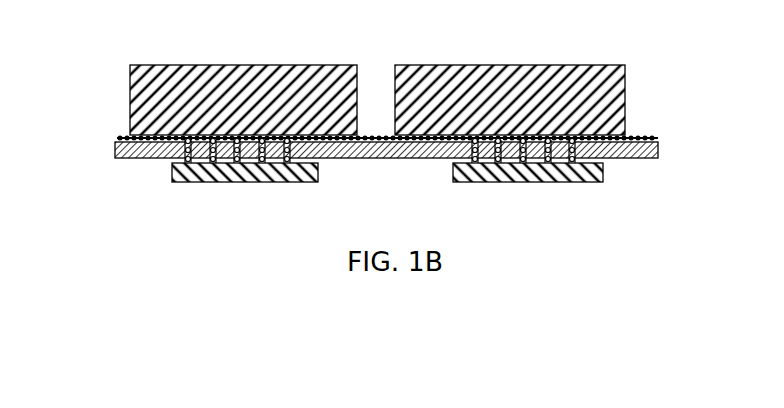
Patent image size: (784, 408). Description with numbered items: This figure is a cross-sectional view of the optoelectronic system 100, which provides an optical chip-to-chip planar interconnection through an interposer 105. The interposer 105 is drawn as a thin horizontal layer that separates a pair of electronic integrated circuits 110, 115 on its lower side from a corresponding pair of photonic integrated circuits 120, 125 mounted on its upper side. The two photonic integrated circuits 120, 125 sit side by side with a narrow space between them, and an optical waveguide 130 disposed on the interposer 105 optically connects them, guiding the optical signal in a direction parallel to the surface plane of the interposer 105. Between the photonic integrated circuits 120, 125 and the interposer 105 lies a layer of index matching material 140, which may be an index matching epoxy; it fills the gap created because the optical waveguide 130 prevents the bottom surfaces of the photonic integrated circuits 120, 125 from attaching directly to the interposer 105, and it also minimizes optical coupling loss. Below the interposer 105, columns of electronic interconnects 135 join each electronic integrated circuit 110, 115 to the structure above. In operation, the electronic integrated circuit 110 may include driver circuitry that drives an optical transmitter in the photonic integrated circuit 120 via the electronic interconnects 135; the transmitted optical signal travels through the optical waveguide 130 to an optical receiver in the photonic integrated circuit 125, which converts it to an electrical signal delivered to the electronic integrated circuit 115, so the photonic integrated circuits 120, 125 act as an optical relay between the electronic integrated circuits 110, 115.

The optoelectronic system 100 is at (415, 118).
The interposer 105 is at (655, 152).
The electronic integrated circuit 110 is at (318, 177).
The electronic integrated circuit 115 is at (603, 175).
The photonic integrated circuit 120 is at (240, 65).
The photonic integrated circuit 125 is at (500, 65).
The optical waveguide 130 is at (370, 133).
The electronic interconnects 135 is at (290, 153).
The index matching material 140 is at (121, 139).